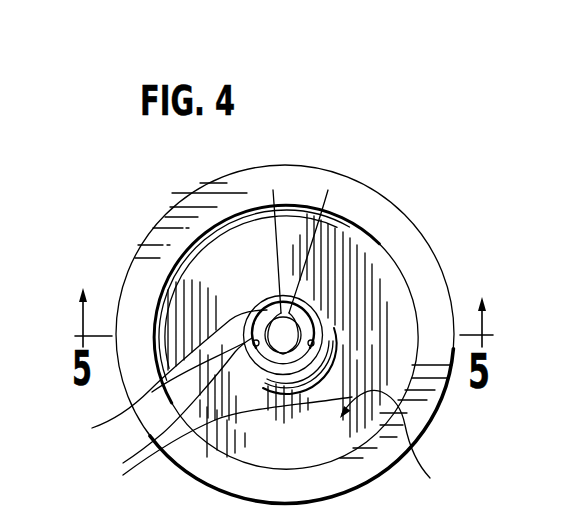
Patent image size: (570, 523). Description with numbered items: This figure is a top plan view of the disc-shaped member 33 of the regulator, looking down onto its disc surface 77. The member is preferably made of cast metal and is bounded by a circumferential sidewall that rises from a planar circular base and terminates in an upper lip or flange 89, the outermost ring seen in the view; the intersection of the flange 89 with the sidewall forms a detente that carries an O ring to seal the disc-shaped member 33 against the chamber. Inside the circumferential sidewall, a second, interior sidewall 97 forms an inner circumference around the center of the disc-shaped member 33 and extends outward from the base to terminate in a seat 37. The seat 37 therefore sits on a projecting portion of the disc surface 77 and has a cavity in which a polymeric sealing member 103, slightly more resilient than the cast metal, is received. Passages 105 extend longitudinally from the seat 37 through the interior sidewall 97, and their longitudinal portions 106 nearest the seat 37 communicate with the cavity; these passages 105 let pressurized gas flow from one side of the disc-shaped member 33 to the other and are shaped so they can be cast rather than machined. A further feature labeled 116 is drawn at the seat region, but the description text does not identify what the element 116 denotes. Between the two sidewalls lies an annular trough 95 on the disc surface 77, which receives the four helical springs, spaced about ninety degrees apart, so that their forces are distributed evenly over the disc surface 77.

The disc-shaped member 33 is at (141, 237).
The seat 37 is at (262, 290).
The disc surface 77 is at (399, 440).
The upper lip or flange 89 is at (438, 414).
The annular trough 95 is at (340, 248).
The interior sidewall 97 is at (312, 312).
The sealing member 103 is at (160, 379).
The passages 105 is at (218, 414).
The longitudinal portions 106 is at (328, 190).
The bore slot 116 is at (273, 190).